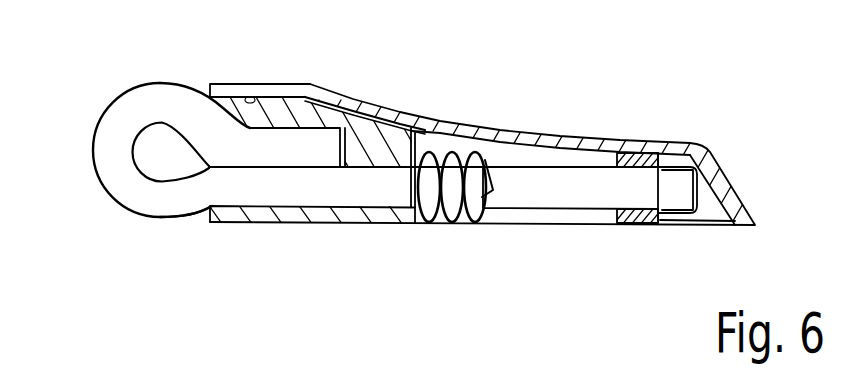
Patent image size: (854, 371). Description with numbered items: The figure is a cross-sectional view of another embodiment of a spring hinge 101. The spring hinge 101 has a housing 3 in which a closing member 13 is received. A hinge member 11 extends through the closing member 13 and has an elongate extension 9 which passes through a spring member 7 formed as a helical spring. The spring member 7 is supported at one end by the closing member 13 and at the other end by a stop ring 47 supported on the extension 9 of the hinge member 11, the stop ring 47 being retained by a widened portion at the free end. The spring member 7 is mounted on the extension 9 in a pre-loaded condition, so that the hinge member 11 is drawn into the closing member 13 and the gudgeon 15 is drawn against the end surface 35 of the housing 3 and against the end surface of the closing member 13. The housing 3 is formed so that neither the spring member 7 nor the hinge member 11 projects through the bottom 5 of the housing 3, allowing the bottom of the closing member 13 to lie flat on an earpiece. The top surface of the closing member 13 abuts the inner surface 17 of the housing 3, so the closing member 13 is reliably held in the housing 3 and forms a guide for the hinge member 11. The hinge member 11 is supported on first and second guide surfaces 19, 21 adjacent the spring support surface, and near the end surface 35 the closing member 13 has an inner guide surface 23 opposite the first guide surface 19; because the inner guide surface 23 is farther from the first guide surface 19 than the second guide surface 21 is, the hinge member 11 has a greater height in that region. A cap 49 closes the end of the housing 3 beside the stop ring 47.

The housing 3 is at (598, 147).
The bottom 5 is at (718, 226).
The spring member 7 is at (413, 226).
The elongate extension 9 is at (537, 195).
The hinge member 11 is at (258, 195).
The closing member 13 is at (383, 146).
The gudgeon 15 is at (122, 122).
The inner surface 17 is at (270, 84).
The first guide surface 19 is at (290, 206).
The second guide surface 21 is at (391, 172).
The inner guide surface 23 is at (331, 96).
The end surface 35 is at (203, 215).
The stop ring 47 is at (641, 224).
The cap 49 is at (677, 187).
The spring hinge 101 is at (480, 88).